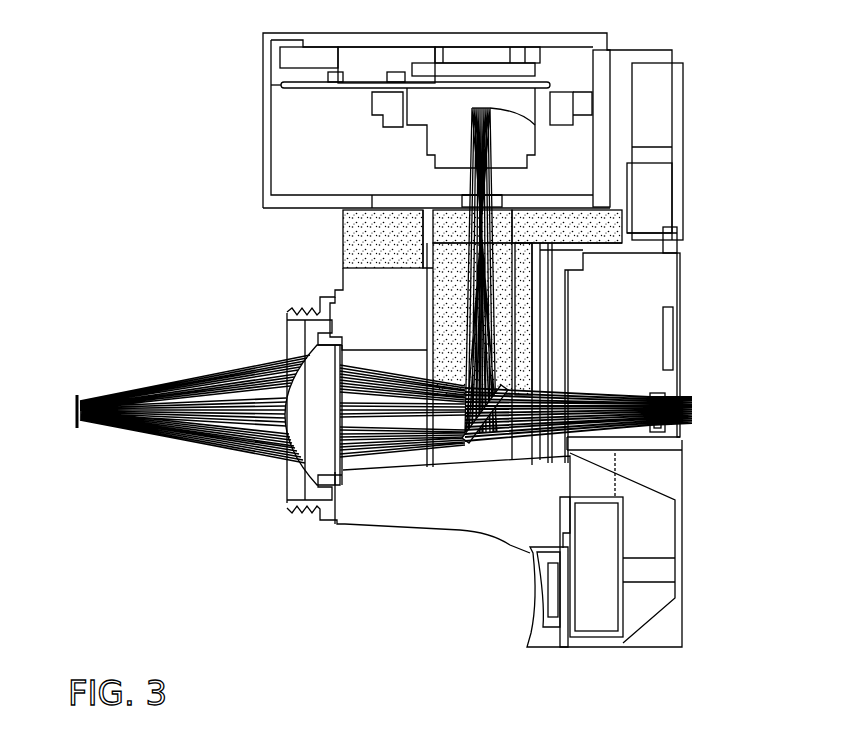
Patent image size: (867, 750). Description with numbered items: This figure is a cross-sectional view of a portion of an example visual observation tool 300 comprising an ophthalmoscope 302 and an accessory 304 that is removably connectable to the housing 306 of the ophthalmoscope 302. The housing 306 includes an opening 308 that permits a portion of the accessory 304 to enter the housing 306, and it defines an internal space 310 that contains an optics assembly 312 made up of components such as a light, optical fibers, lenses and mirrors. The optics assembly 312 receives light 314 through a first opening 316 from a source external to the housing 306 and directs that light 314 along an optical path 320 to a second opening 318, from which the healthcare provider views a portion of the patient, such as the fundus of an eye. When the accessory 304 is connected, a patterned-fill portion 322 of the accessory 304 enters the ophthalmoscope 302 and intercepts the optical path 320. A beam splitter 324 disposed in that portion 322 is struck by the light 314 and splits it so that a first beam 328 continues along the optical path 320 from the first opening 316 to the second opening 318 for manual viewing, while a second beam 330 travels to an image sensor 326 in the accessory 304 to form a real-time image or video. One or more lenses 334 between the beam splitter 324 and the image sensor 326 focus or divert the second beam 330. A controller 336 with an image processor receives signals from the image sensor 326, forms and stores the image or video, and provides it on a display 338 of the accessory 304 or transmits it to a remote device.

The visual observation tool 300 is at (130, 85).
The ophthalmoscope 302 is at (365, 577).
The accessory 304 is at (716, 70).
The housing 306 is at (670, 272).
The opening 308 is at (460, 242).
The internal space 310 is at (594, 353).
The optics assembly 312 is at (390, 478).
The light 314 is at (148, 395).
The first opening 316 is at (282, 468).
The second opening 318 is at (680, 432).
The optical path 320 is at (445, 373).
The portion 322 is at (352, 231).
The beam splitter 324 is at (498, 385).
The image sensor 326 is at (520, 115).
The first beam 328 is at (611, 427).
The second beam 330 is at (470, 192).
The lenses 334 is at (477, 203).
The controller 336 is at (483, 88).
The display 338 is at (680, 124).